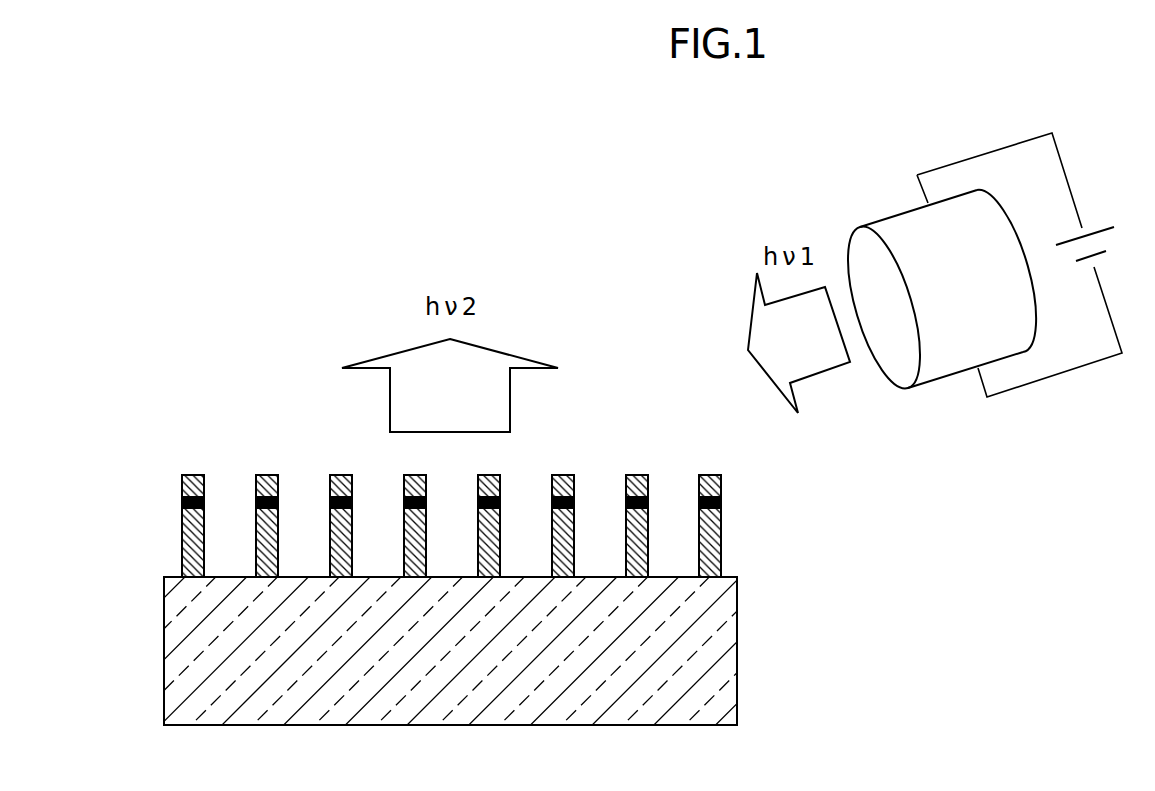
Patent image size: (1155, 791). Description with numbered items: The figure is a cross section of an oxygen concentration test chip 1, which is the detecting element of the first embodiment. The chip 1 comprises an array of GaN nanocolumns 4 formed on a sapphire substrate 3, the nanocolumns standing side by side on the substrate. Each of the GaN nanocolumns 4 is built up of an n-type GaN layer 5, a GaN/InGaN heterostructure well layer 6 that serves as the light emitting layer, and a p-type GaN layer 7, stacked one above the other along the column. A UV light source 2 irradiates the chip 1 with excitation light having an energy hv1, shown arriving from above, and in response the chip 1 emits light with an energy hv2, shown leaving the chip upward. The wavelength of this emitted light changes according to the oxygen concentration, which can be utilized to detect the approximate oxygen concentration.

The oxygen concentration test chip 1 is at (447, 605).
The UV light source 2 is at (897, 215).
The sapphire substrate 3 is at (737, 658).
The GaN nanocolumns 4 is at (518, 540).
The n-type GaN layer 5 is at (721, 547).
The GaN/InGaN heterostructure well layer 6 is at (721, 503).
The p-type GaN layer 7 is at (497, 496).